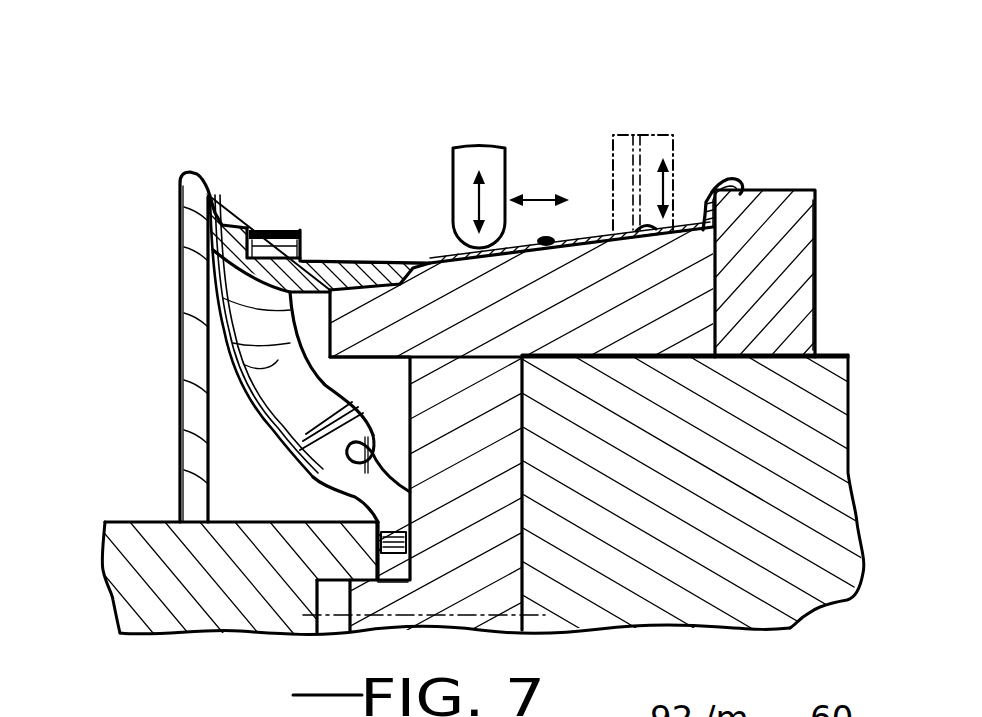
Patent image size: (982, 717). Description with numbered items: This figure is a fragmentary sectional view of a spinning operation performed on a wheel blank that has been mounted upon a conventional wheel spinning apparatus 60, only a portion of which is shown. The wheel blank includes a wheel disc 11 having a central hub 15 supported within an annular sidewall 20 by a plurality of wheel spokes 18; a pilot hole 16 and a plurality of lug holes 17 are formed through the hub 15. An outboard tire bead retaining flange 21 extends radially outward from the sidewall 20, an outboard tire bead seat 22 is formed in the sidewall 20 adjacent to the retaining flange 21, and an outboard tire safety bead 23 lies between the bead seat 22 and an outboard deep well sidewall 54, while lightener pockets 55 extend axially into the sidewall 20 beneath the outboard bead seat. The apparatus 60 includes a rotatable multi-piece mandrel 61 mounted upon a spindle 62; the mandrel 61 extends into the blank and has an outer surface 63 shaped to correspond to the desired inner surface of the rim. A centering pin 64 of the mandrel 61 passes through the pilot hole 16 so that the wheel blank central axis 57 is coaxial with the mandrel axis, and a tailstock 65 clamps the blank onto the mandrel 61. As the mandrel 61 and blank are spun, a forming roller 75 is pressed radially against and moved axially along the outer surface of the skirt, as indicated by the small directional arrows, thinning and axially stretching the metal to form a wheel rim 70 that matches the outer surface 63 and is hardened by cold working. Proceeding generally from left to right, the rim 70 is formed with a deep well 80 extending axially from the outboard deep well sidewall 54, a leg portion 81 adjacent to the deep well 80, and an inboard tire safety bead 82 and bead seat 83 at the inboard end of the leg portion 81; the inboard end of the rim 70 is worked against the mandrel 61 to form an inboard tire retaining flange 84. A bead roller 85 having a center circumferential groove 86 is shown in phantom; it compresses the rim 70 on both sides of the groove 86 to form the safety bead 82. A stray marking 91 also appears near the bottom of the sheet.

The wheel disc 11 is at (342, 384).
The central hub 15 is at (317, 470).
The pilot hole 16 is at (403, 592).
The lug holes 17 is at (418, 543).
The wheel spokes 18 is at (277, 358).
The annular sidewall 20 is at (253, 270).
The outboard tire bead retaining flange 21 is at (208, 182).
The outboard tire bead seat 22 is at (249, 228).
The outboard tire safety bead 23 is at (284, 224).
The outboard deep well sidewall 54 is at (322, 258).
The lightener pockets 55 is at (314, 254).
The wheel blank central axis 57 is at (533, 615).
The wheel spinning apparatus 60 is at (774, 177).
The rotatable multi-piece mandrel 61 is at (812, 276).
The spindle 62 is at (832, 356).
The outer surface 63 is at (550, 245).
The centering pin 64 is at (360, 623).
The tailstock 65 is at (132, 521).
The wheel rim 70 is at (437, 265).
The forming roller 75 is at (494, 166).
The deep well 80 is at (377, 283).
The leg portion 81 is at (600, 240).
The inboard tire safety bead 82 is at (645, 238).
The inboard tire bead seat 83 is at (686, 218).
The inboard tire retaining flange 84 is at (723, 178).
The bead roller 85 is at (618, 140).
The center circumferential groove 86 is at (660, 105).
The reference mark 91 is at (716, 672).